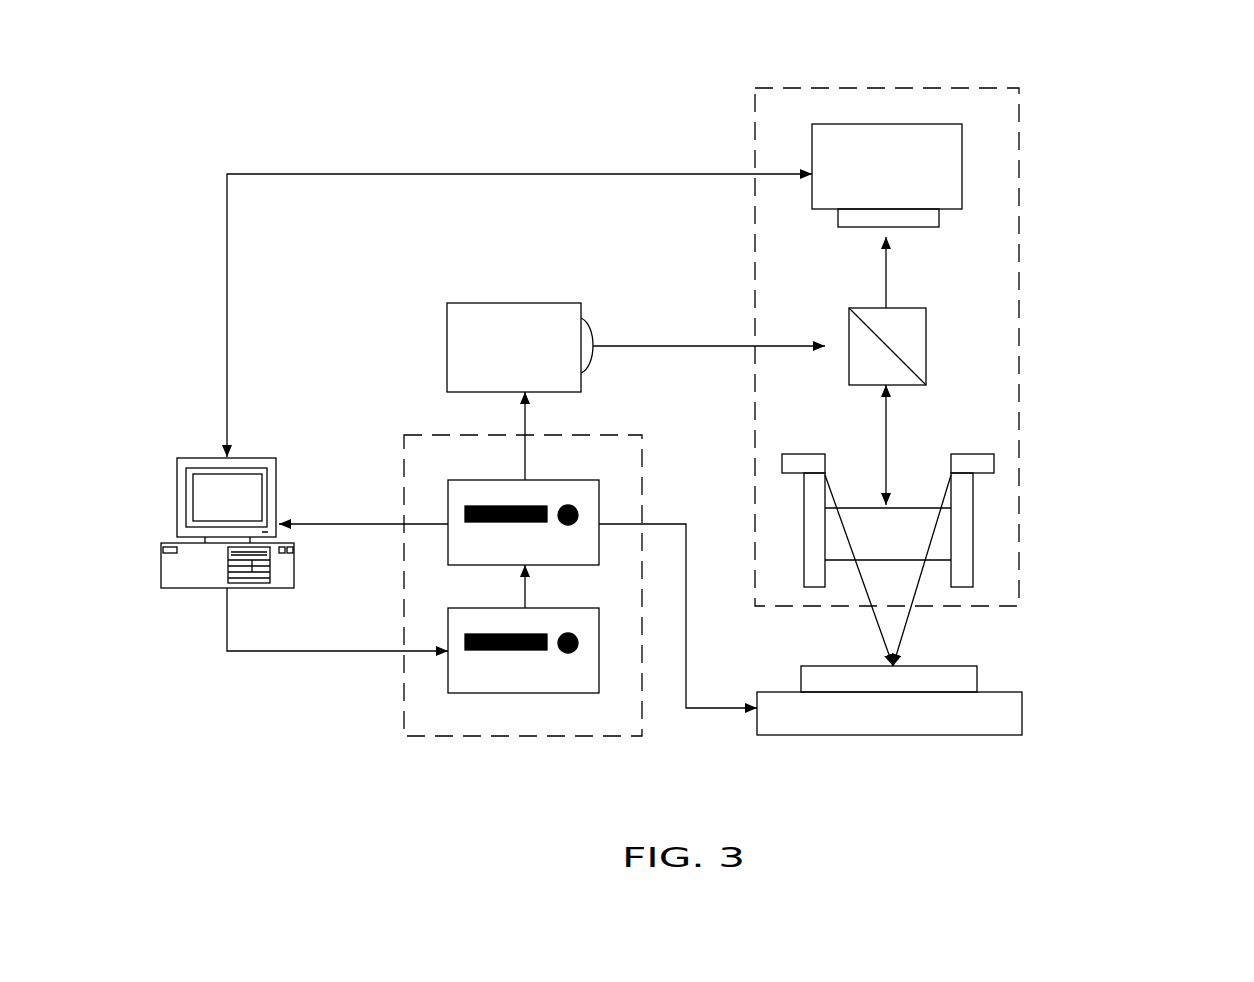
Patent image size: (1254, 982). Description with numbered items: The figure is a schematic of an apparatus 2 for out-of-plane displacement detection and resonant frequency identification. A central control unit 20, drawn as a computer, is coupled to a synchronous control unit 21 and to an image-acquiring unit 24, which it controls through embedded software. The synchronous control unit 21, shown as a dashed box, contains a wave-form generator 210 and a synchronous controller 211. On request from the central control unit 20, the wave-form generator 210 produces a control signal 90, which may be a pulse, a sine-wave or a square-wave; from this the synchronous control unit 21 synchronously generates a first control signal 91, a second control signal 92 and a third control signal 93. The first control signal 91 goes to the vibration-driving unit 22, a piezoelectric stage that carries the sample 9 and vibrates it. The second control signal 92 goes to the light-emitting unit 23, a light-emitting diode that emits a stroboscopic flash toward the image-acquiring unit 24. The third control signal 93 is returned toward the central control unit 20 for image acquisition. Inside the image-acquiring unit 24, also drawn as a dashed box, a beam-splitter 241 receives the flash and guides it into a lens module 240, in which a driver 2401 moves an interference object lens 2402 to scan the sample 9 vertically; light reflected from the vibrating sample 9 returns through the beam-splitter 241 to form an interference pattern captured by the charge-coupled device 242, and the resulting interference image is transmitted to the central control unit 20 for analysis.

The apparatus 2 is at (180, 148).
The central control unit 20 is at (176, 478).
The synchronous control unit 21 is at (403, 714).
The wave-form generator 210 is at (458, 620).
The synchronous controller 211 is at (455, 505).
The vibration-driving unit 22 is at (1005, 705).
The light-emitting unit 23 is at (455, 312).
The image-acquiring unit 24 is at (1021, 308).
The lens module 240 is at (1010, 560).
The driver 2401 is at (979, 461).
The interference object lens 2402 is at (966, 505).
The beam-splitter 241 is at (855, 330).
The charge-coupled device (CCD) 242 is at (878, 137).
The sample 9 is at (977, 677).
The control signal 90 is at (525, 596).
The first control signal 91 is at (658, 524).
The second control signal 92 is at (523, 463).
The third control signal 93 is at (360, 525).